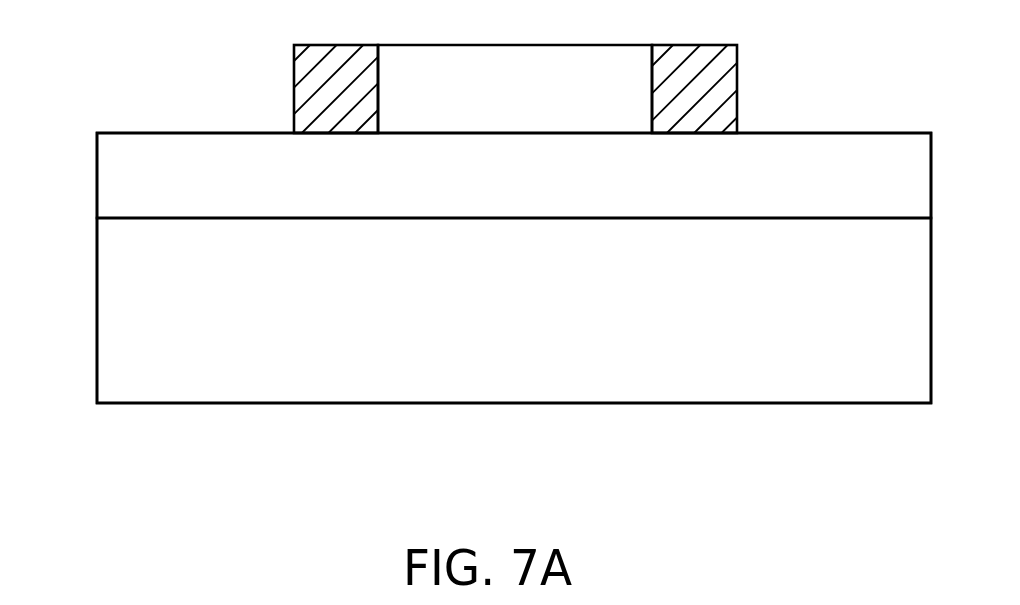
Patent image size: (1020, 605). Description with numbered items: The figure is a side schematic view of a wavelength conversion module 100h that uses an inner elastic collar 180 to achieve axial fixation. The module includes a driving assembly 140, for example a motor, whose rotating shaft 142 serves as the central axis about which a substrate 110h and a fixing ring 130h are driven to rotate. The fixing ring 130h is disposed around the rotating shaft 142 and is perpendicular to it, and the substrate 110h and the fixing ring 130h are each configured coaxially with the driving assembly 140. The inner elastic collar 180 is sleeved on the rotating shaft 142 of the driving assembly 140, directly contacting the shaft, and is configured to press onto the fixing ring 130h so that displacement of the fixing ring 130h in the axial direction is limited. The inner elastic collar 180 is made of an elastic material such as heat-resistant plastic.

The wavelength conversion module 100h is at (926, 522).
The substrate 110h is at (120, 263).
The fixing ring 130h is at (120, 179).
The rotating shaft 142 is at (568, 80).
The driving assembly 140 is at (557, 66).
The inner elastic collar 180 is at (705, 92).